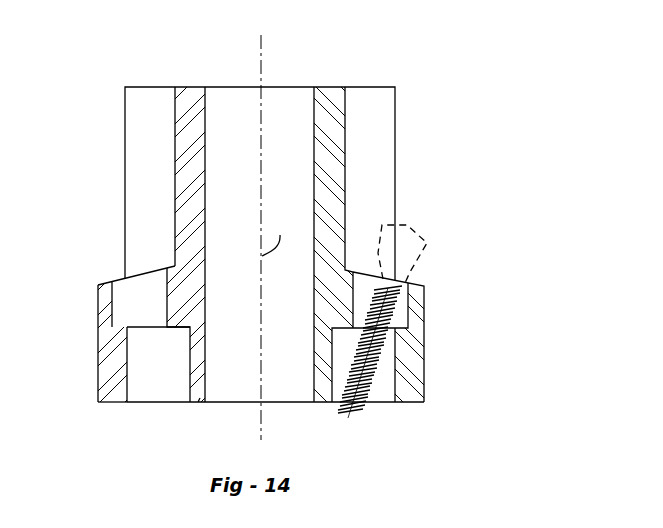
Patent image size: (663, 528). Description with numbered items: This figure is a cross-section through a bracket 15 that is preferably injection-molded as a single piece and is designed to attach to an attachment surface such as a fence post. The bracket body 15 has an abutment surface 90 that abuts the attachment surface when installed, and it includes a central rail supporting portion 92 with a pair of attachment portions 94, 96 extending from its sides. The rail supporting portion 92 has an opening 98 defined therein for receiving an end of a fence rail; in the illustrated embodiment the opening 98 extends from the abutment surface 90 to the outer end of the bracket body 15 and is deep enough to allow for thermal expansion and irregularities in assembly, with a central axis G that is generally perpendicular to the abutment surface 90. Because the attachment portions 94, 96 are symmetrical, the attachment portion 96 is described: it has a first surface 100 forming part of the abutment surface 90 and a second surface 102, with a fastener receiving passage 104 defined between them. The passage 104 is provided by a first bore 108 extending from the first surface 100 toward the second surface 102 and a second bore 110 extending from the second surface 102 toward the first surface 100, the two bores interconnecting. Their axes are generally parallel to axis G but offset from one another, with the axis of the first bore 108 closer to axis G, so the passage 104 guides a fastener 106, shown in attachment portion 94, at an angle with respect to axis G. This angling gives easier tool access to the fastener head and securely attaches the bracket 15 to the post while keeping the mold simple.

The bracket 15 is at (408, 79).
The central rail supporting portion 92 is at (188, 88).
The opening 98 is at (279, 108).
The second bore 110 is at (142, 287).
The second surface 102 is at (105, 283).
The attachment portion 96 is at (102, 335).
The fastener receiving passage 104 is at (157, 333).
The first bore 108 is at (157, 392).
The first surface 100 is at (110, 402).
The abutment surface 90 is at (200, 403).
The attachment portion 94 is at (402, 368).
The fastener 106 is at (433, 247).